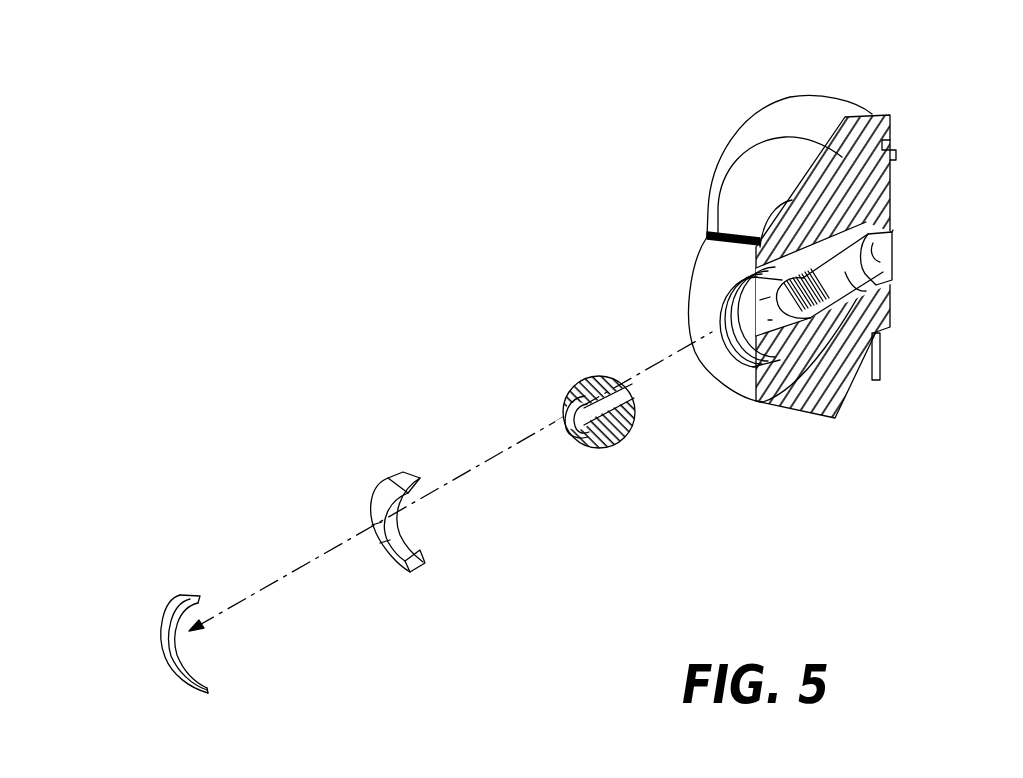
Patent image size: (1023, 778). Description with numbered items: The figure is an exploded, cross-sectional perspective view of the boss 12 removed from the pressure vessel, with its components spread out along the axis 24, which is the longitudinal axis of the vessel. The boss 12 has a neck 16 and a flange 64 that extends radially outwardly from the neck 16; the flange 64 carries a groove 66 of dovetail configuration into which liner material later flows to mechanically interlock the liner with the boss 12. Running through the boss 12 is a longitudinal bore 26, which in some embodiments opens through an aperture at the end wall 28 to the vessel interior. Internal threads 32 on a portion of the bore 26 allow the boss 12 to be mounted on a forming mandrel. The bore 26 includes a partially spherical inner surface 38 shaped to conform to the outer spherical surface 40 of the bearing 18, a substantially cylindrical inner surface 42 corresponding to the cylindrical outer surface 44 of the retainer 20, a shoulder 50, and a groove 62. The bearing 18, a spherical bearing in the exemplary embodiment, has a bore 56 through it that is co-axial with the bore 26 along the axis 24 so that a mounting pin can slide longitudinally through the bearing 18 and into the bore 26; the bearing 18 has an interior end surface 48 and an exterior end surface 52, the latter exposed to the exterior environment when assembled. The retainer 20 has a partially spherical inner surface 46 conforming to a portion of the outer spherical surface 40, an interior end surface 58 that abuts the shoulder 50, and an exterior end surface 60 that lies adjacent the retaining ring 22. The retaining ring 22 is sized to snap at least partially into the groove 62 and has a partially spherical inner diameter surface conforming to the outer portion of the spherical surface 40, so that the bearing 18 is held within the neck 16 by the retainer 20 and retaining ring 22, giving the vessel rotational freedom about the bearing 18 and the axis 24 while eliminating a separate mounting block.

The boss 12 is at (797, 273).
The neck 16 is at (778, 380).
The bearing 18 is at (601, 466).
The retainer 20 is at (413, 500).
The retaining ring 22 is at (205, 665).
The axis 24 is at (297, 567).
The longitudinal bore 26 is at (862, 291).
The end wall 28 is at (890, 250).
The internal threads 32 is at (876, 385).
The partially spherical inner surface 38 is at (816, 403).
The outer spherical surface 40 is at (612, 426).
The cylindrical inner surface 42 is at (730, 288).
The cylindrical outer surface 44 is at (398, 475).
The inner surface 46 is at (390, 535).
The interior end surface 48 is at (630, 417).
The shoulder 50 is at (751, 342).
The exterior end surface 52 is at (575, 432).
The bore 56 is at (615, 403).
The interior end surface 58 is at (422, 486).
The exterior end surface 60 is at (372, 499).
The groove 62 is at (721, 322).
The flange 64 is at (866, 120).
The groove 66 is at (885, 140).